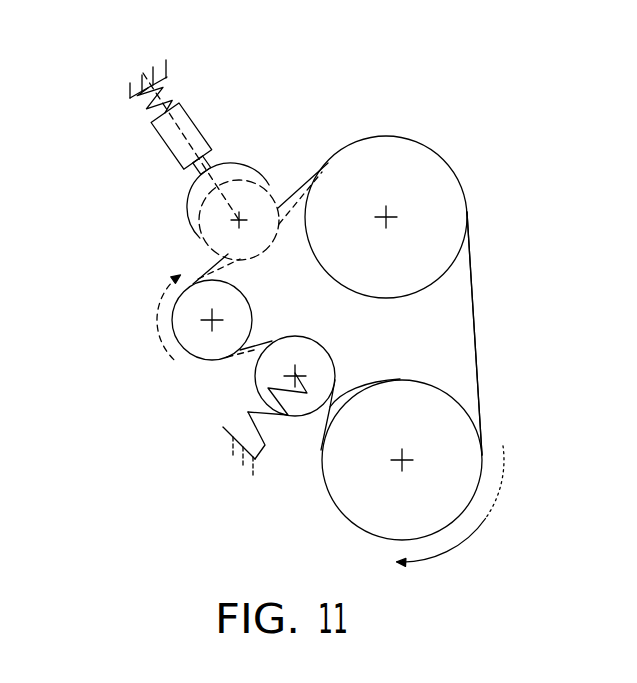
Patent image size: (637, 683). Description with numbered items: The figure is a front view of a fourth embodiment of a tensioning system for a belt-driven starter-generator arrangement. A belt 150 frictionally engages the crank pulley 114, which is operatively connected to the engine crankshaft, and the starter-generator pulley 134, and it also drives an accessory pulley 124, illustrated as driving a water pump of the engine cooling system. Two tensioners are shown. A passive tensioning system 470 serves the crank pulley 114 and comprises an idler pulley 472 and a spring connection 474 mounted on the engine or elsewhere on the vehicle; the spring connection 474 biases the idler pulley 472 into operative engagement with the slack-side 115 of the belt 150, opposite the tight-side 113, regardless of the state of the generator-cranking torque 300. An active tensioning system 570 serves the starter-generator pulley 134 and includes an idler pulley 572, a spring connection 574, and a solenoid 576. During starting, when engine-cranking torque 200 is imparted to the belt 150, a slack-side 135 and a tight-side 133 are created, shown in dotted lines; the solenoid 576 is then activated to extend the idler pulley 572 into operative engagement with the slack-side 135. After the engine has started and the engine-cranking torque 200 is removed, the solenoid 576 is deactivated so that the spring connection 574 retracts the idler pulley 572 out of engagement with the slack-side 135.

The tight-side 113 is at (477, 357).
The crank pulley 114 is at (343, 507).
The slack-side 115 is at (330, 407).
The pulley 124 is at (433, 187).
The tight-side 133 is at (250, 356).
The starter-generator pulley 134 is at (240, 308).
The slack-side 135 is at (237, 268).
The belt 150 is at (475, 297).
The engine-cranking torque 200 is at (157, 318).
The generator-cranking torque 300 is at (486, 518).
The passive tensioning system 470 is at (221, 436).
The idler pulley 472 is at (252, 390).
The spring connection 474 is at (268, 422).
The active tensioning system 570 is at (127, 82).
The idler pulley 572 is at (235, 163).
The spring connection 574 is at (168, 84).
The solenoid 576 is at (165, 147).